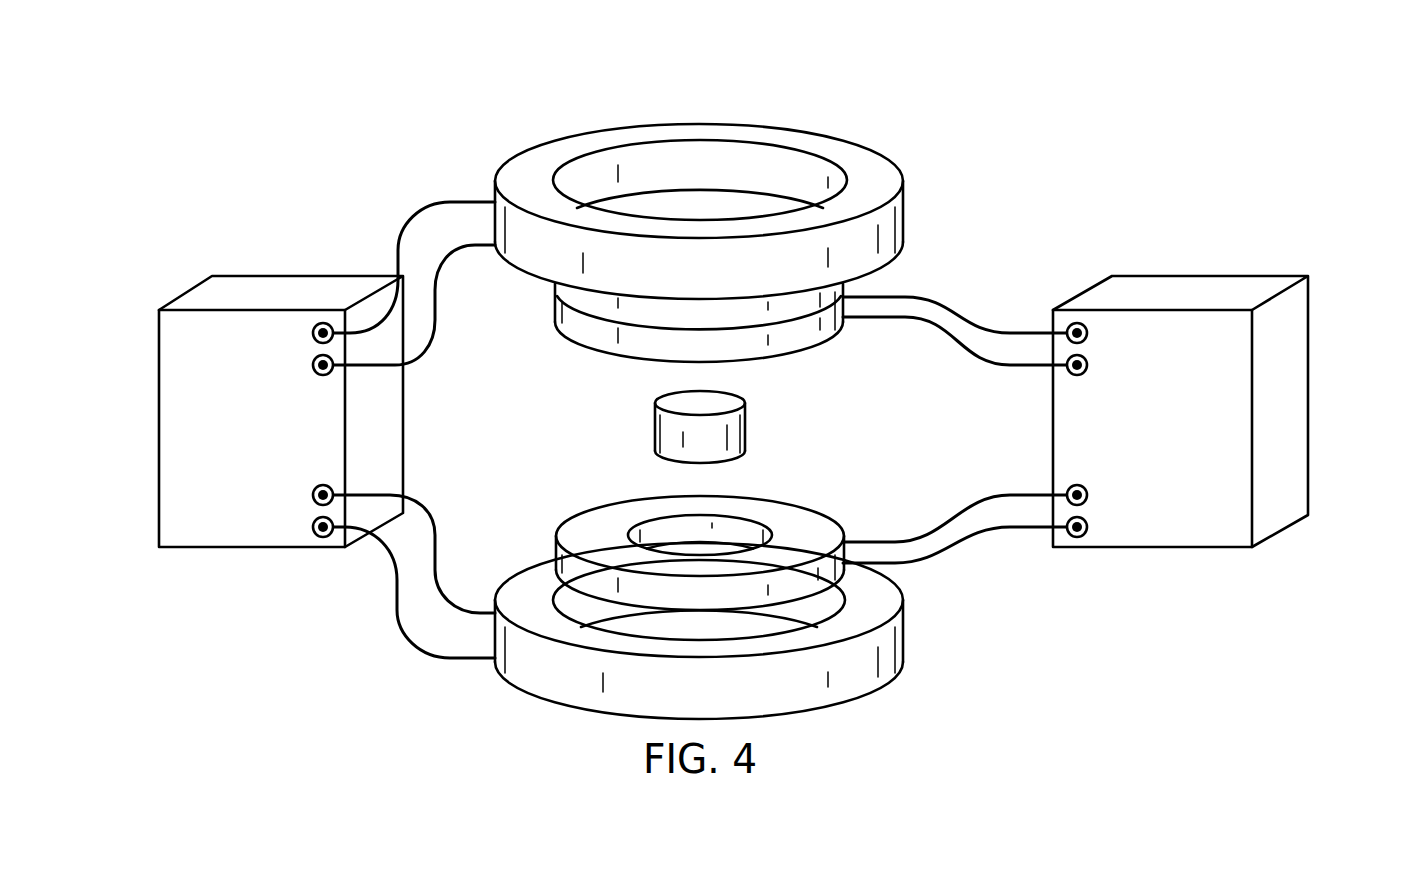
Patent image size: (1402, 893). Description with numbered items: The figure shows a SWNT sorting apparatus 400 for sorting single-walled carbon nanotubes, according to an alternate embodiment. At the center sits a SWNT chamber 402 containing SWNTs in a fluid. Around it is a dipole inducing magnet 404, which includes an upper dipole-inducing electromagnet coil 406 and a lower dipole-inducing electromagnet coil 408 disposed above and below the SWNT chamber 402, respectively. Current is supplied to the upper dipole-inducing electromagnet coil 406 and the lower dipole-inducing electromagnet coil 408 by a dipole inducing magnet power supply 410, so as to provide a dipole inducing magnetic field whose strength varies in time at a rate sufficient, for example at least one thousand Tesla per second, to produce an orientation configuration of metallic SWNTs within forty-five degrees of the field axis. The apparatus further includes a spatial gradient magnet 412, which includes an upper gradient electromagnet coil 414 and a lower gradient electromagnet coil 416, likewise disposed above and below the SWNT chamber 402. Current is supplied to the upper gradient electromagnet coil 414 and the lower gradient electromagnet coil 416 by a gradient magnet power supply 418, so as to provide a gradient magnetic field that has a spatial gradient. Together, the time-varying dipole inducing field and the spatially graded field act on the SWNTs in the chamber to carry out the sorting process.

The SWNT sorting apparatus 400 is at (988, 89).
The SWNT chamber 402 is at (653, 428).
The dipole inducing magnet 404 is at (399, 176).
The upper dipole-inducing electromagnet coil 406 is at (533, 157).
The lower dipole-inducing electromagnet coil 408 is at (543, 705).
The dipole inducing magnet power supply 410 is at (158, 430).
The spatial gradient magnet 412 is at (1043, 195).
The upper gradient electromagnet coil 414 is at (553, 305).
The lower gradient electromagnet coil 416 is at (555, 548).
The gradient magnet power supply 418 is at (1310, 393).